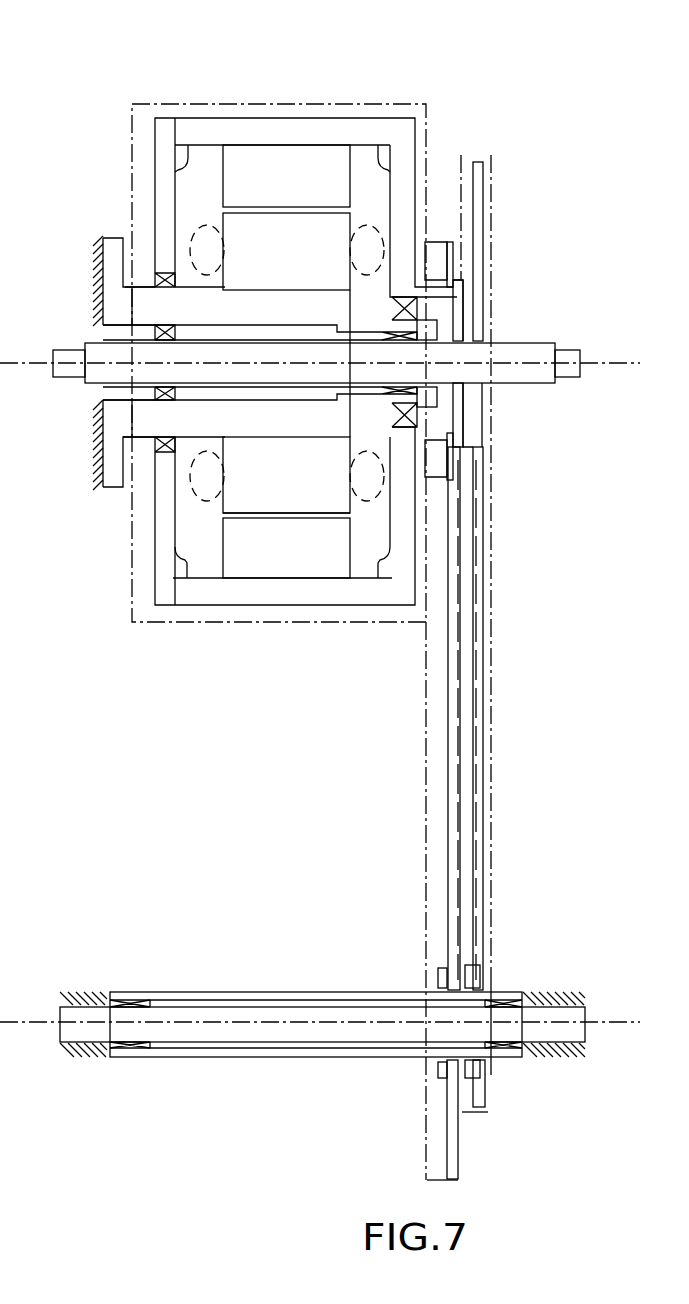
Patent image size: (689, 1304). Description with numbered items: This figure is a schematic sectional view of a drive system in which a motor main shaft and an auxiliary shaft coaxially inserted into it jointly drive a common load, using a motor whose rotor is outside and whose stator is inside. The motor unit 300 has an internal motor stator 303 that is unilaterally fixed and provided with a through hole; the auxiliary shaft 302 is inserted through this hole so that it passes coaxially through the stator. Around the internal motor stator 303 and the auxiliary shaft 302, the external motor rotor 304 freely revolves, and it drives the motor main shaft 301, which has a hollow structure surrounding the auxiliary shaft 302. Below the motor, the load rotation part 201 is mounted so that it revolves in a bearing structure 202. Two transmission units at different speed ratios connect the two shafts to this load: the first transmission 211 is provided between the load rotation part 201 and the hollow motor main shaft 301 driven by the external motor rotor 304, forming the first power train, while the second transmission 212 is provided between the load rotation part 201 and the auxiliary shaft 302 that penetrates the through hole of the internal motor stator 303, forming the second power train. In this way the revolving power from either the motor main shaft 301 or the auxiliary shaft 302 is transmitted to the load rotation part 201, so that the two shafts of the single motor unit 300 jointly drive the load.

The motor unit 300 is at (241, 104).
The external motor rotor 304 is at (287, 168).
The internal motor stator 303 is at (315, 262).
The motor main shaft 301 is at (443, 290).
The auxiliary shaft 302 is at (510, 350).
The first transmission 211 is at (427, 815).
The second transmission 212 is at (490, 750).
The load rotation part 201 is at (308, 995).
The bearing structure 202 is at (158, 1020).